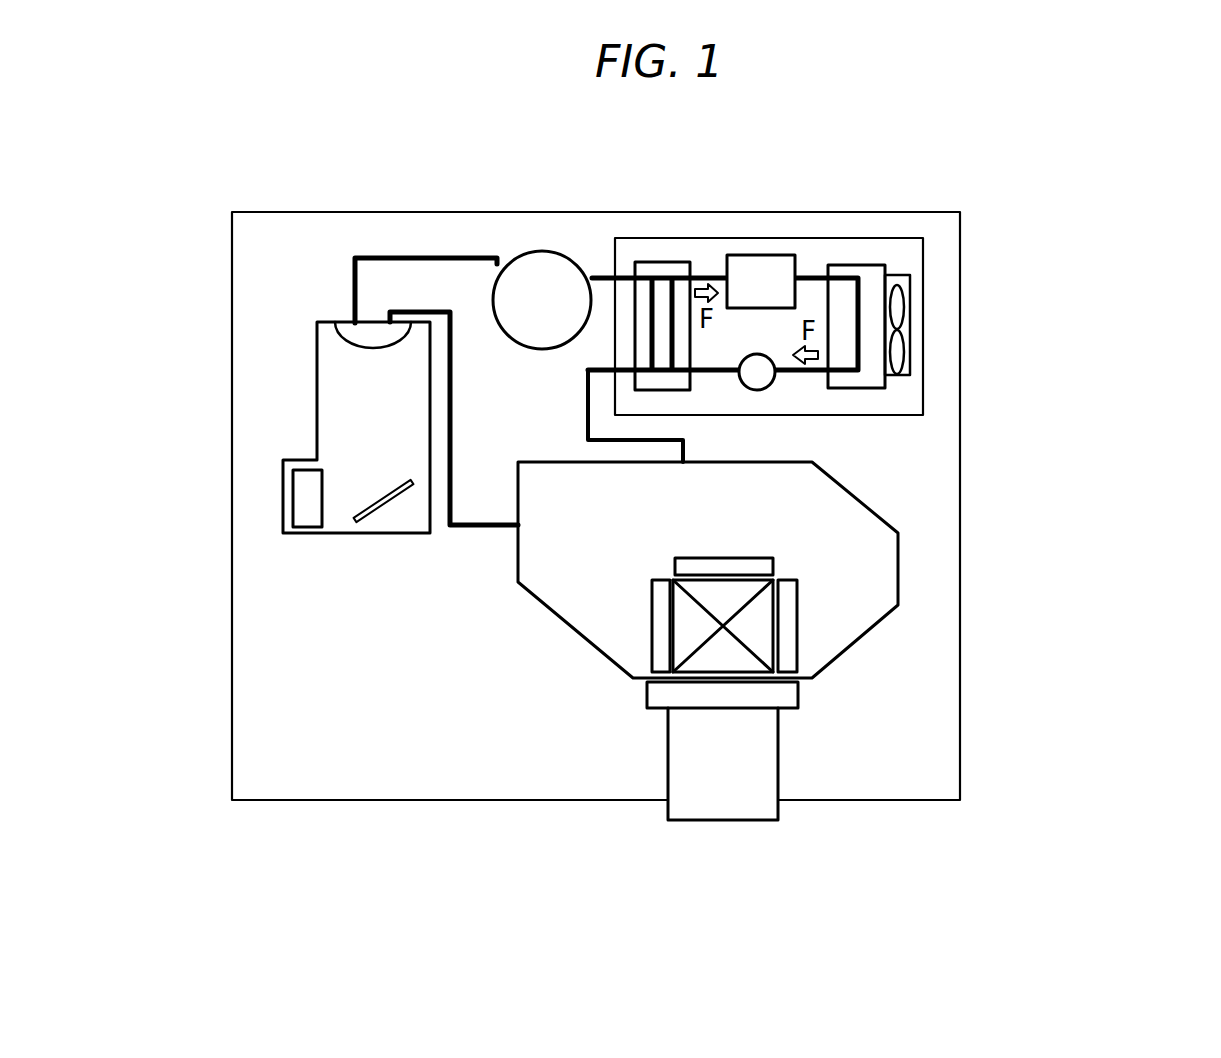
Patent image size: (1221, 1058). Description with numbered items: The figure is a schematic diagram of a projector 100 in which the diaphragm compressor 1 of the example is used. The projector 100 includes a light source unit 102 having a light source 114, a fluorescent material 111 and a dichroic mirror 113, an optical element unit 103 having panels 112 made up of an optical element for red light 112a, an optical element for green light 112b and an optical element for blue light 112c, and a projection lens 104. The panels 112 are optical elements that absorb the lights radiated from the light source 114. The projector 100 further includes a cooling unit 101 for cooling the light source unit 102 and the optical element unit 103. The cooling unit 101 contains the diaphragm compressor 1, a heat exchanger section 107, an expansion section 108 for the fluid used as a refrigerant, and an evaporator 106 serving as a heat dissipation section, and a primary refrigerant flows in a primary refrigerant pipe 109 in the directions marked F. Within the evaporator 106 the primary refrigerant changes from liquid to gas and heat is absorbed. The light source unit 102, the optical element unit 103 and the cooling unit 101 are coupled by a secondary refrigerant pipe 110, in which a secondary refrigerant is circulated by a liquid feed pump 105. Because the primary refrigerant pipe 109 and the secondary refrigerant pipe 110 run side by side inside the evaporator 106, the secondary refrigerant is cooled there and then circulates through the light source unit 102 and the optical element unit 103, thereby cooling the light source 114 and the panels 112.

The projector 100 is at (1032, 225).
The cooling unit 101 is at (708, 236).
The diaphragm compressor 1 is at (762, 262).
The light source unit 102 is at (343, 533).
The optical element unit 103 is at (524, 590).
The projection lens 104 is at (698, 777).
The liquid feed pump 105 is at (537, 270).
The evaporator 106 is at (658, 270).
The heat exchanger section 107 is at (872, 275).
The expansion section 108 is at (758, 378).
The primary refrigerant pipe 109 is at (815, 272).
The secondary refrigerant pipe 110 is at (420, 253).
The fluorescent material 111 is at (307, 490).
The panels 112 is at (800, 678).
The optical element for red light 112a is at (658, 622).
The optical element for green light 112b is at (730, 563).
The optical element for blue light 112c is at (788, 625).
The dichroic mirror 113 is at (387, 507).
The light source 114 is at (368, 337).